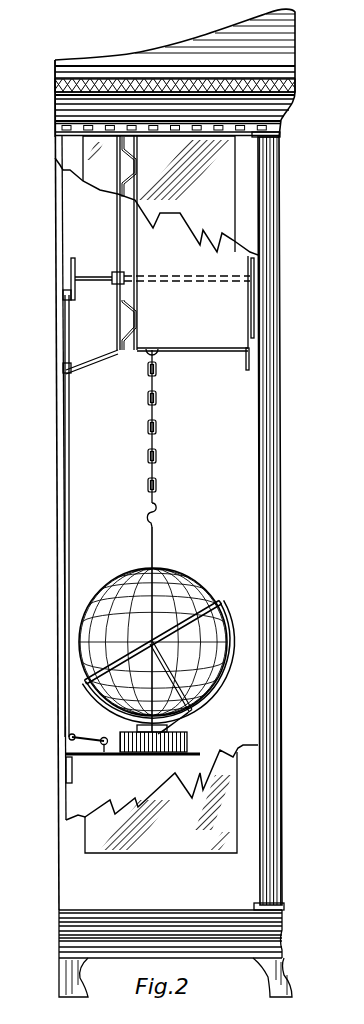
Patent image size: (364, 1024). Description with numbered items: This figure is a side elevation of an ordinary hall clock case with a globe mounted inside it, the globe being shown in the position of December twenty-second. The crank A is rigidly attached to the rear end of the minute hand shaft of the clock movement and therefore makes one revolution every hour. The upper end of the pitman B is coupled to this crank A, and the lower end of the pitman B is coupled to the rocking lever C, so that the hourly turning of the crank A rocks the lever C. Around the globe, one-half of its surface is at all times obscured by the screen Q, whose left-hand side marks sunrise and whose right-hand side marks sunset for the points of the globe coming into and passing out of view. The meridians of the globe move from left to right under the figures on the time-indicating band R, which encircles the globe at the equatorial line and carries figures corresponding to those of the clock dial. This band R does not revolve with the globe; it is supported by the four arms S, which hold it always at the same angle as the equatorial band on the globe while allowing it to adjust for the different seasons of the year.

The crank A is at (76, 276).
The pitman B is at (70, 484).
The rocking lever C is at (93, 740).
The screen Q is at (153, 548).
The time-indicating band R is at (222, 600).
The arms S is at (227, 676).